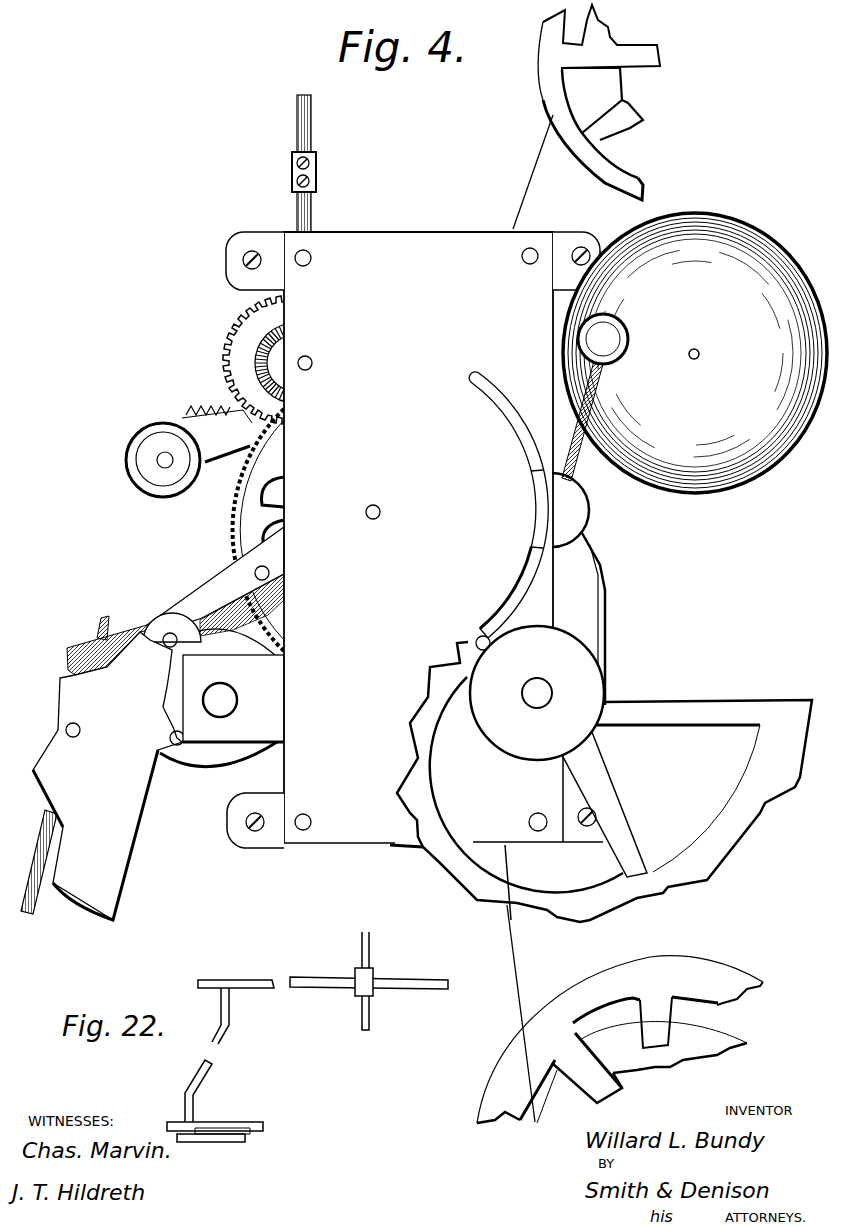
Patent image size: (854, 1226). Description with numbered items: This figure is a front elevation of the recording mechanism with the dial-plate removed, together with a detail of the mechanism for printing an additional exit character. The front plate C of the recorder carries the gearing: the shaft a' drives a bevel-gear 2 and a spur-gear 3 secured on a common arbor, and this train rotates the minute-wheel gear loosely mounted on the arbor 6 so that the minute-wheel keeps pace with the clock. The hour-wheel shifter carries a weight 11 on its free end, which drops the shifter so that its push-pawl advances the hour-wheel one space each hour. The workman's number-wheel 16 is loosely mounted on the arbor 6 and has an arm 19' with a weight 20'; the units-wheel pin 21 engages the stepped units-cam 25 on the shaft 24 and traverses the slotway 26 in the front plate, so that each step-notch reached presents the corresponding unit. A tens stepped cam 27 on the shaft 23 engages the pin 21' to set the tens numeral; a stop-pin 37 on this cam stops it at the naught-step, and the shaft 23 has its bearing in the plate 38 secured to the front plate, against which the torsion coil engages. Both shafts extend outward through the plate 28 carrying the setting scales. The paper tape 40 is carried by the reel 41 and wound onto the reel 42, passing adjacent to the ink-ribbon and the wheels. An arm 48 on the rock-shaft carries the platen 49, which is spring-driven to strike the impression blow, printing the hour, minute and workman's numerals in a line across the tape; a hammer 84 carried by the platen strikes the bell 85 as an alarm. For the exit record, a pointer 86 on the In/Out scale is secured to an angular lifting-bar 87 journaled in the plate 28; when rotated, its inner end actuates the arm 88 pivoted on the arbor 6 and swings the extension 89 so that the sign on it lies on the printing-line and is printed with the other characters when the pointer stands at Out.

In FIG. 4, the bevel-gear 2 is at (289, 363).
In FIG. 4, the spur-gear 3 is at (277, 360).
In FIG. 4, the arbor 6 is at (373, 499).
In FIG. 22, the arbor 6 is at (364, 968).
In FIG. 4, the weight 11 is at (189, 451).
In FIG. 4, the units number-wheel 16 is at (242, 530).
In FIG. 4, the arm 19' is at (215, 581).
In FIG. 4, the weight 20' is at (172, 627).
In FIG. 4, the units-wheel pin 21 is at (471, 624).
In FIG. 4, the pin 21' is at (165, 663).
In FIG. 4, the shaft 23 is at (233, 698).
In FIG. 4, the shaft 24 is at (537, 693).
In FIG. 4, the units-cam 25 is at (601, 782).
In FIG. 4, the slotway 26 is at (508, 505).
In FIG. 4, the tens stepped cam 27 is at (107, 776).
In FIG. 22, the plate 28 is at (275, 1088).
In FIG. 4, the stop-pin 37 is at (169, 728).
In FIG. 4, the plate 38 is at (218, 698).
In FIG. 4, the paper tape 40 is at (531, 618).
In FIG. 4, the reel 41 is at (620, 1039).
In FIG. 4, the reel 42 is at (608, 102).
In FIG. 4, the arm 48 is at (611, 619).
In FIG. 4, the platen 49 is at (588, 510).
In FIG. 4, the hammer 84 is at (595, 397).
In FIG. 4, the bell 85 is at (695, 353).
In FIG. 22, the pointer 86 is at (215, 1113).
In FIG. 4, the lifting-bar 87 is at (32, 862).
In FIG. 22, the lifting-bar 87 is at (236, 1024).
In FIG. 4, the arm 88 is at (135, 625).
In FIG. 22, the arm 88 is at (369, 970).
In FIG. 22, the extension 89 is at (392, 969).
In FIG. 4, the shaft a' is at (317, 163).
In FIG. 4, the front plate C is at (413, 540).